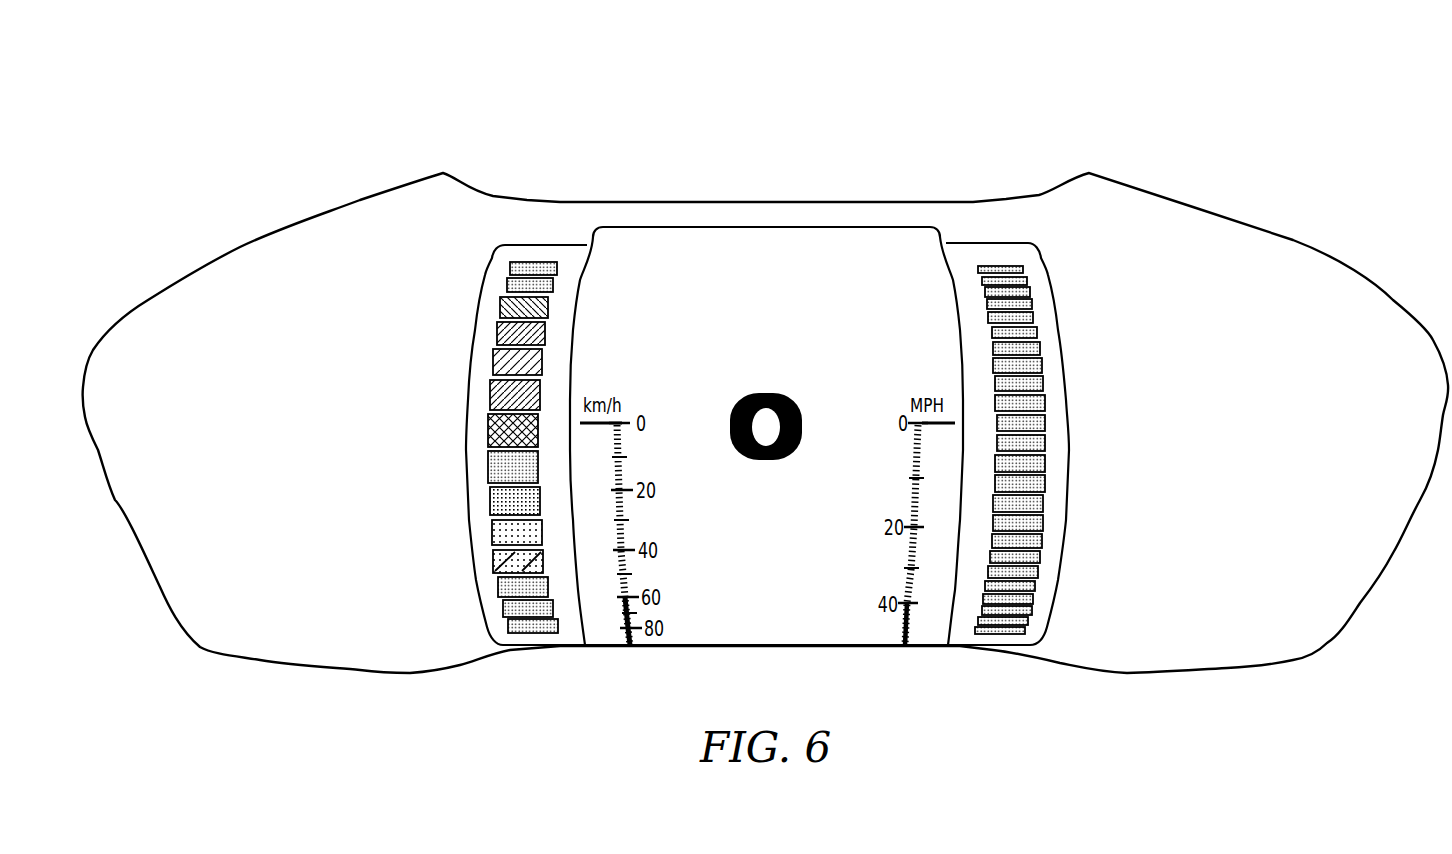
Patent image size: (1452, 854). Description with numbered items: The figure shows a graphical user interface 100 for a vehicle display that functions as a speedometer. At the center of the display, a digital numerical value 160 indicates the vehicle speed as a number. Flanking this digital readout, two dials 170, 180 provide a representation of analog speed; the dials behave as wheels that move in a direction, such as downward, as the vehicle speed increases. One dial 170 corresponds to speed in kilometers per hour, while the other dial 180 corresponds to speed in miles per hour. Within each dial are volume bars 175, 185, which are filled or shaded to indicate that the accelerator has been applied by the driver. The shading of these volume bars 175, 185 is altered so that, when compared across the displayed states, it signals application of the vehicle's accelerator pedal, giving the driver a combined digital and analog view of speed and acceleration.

The vehicle display system 100 is at (273, 149).
The digital numerical value 160 is at (767, 394).
The dial 170 is at (490, 445).
The volume bar 175 is at (498, 400).
The dial 180 is at (1048, 444).
The volume bar 185 is at (1030, 393).